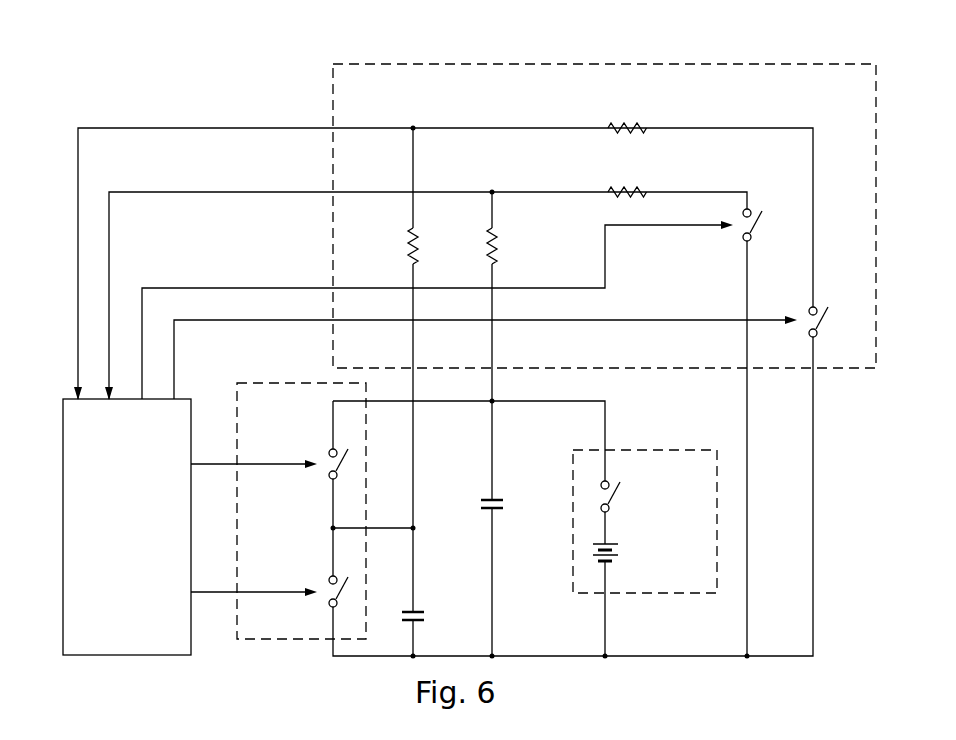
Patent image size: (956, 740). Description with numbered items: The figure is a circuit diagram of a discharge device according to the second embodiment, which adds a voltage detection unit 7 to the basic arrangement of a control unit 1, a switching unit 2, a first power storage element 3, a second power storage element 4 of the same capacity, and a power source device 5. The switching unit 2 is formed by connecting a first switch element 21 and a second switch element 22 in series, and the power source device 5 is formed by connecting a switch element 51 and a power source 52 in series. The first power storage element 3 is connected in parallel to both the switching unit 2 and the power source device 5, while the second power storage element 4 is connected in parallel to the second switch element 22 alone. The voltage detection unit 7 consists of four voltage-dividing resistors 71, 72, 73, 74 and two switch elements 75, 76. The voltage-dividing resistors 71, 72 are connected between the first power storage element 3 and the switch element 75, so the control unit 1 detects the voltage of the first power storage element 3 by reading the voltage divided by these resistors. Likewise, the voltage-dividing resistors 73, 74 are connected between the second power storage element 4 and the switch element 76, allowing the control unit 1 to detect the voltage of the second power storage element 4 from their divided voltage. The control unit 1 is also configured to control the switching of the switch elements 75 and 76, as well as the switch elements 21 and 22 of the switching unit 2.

The control unit 1 is at (70, 397).
The switching unit 2 is at (278, 383).
The first switch element 21 is at (330, 450).
The second switch element 22 is at (330, 578).
The first power storage element 3 is at (497, 497).
The second power storage element 4 is at (418, 608).
The power source device 5 is at (676, 449).
The switch element 51 is at (610, 506).
The power source 52 is at (620, 551).
The voltage detection unit 7 is at (372, 64).
The voltage-dividing resistor 71 is at (618, 187).
The voltage-dividing resistor 72 is at (488, 246).
The voltage-dividing resistor 73 is at (618, 123).
The voltage-dividing resistor 74 is at (409, 246).
The switch element 75 is at (752, 210).
The switch element 76 is at (818, 308).